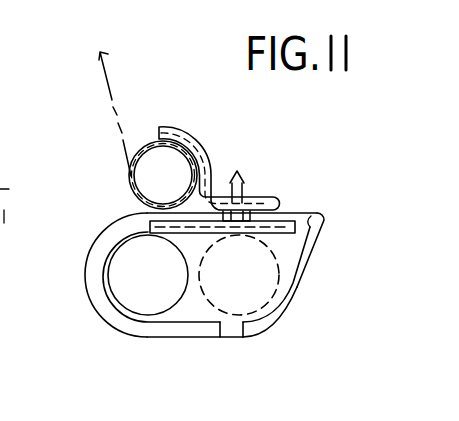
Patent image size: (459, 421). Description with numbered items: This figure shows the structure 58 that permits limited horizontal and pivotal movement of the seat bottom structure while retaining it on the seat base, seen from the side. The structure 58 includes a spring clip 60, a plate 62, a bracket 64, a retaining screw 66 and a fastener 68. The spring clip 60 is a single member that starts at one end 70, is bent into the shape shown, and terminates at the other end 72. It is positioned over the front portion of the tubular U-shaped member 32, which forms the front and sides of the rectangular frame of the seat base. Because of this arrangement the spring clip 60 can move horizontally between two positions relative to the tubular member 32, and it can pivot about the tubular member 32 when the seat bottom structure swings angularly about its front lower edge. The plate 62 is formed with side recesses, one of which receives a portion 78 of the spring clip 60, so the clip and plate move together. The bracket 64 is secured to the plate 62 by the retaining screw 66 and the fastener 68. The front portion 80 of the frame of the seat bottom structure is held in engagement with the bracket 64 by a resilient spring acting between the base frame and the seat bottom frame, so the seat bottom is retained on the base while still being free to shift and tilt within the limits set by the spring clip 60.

The tubular U-shaped member 32 is at (108, 278).
The structure 58 is at (100, 318).
The spring clip 60 is at (165, 339).
The plate 62 is at (281, 217).
The bracket 64 is at (193, 134).
The retaining screw 66 is at (238, 170).
The fastener 68 is at (257, 192).
The end 70 is at (247, 334).
The end 72 is at (222, 324).
The portion 78 is at (148, 212).
The front portion 80 is at (135, 154).